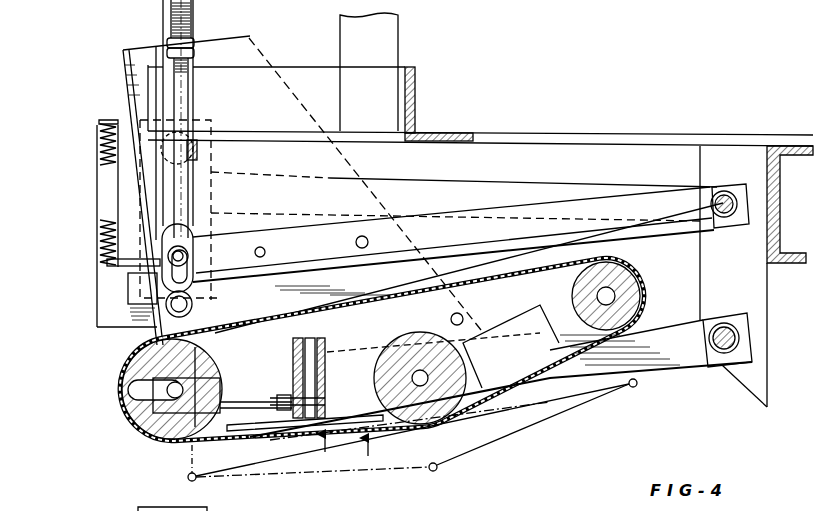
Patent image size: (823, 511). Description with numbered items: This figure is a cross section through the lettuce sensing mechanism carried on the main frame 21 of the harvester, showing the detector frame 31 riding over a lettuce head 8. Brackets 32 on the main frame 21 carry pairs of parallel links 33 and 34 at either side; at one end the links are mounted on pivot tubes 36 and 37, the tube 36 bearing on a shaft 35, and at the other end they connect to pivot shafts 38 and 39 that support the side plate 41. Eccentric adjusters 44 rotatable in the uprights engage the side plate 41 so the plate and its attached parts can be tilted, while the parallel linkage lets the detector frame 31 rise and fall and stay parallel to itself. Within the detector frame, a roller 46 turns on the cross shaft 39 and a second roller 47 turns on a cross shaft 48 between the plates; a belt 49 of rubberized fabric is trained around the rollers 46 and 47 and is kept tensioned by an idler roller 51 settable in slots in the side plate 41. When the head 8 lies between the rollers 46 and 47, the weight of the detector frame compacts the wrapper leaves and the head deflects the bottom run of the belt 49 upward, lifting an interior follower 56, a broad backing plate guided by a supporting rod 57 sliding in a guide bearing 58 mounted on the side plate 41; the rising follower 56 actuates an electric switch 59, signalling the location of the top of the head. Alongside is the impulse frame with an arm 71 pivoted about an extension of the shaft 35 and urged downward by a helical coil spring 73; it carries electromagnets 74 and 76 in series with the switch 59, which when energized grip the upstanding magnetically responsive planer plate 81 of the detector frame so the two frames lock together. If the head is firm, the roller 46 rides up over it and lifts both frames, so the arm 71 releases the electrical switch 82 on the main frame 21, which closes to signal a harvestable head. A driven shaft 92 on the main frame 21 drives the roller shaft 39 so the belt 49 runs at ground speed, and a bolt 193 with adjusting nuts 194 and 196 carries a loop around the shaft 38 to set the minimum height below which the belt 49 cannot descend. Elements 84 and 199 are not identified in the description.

The lettuce head 8 is at (410, 458).
The main frame 21 is at (414, 103).
The detector frame 31 is at (410, 207).
The brackets 32 is at (702, 295).
The parallel links 33 is at (517, 207).
The parallel links 34 is at (673, 363).
The shaft 35 is at (725, 222).
The pivot tube 36 is at (732, 190).
The pivot tube 37 is at (723, 364).
The pivot shaft 38 is at (188, 262).
The pivot shaft 39 is at (133, 380).
The side plate 41 is at (316, 306).
The eccentric adjusters 44 is at (192, 313).
The roller 46 is at (133, 415).
The roller 47 is at (437, 316).
The cross shaft 48 is at (428, 385).
The belt 49 is at (127, 393).
The idler roller 51 is at (612, 270).
The interior follower 56 is at (248, 412).
The supporting rod 57 is at (320, 347).
The guide bearing 58 is at (295, 352).
The electric switch 59 is at (290, 387).
The arm 71 is at (597, 163).
The helical coil spring 73 is at (100, 260).
The electromagnet 74 is at (135, 178).
The electromagnet 76 is at (134, 227).
The planer plate 81 is at (276, 58).
The electrical switch 82 is at (133, 300).
The base member 84 is at (191, 507).
The driven shaft 92 is at (724, 321).
The bolt 193 is at (177, 90).
The adjusting nut 194 is at (167, 40).
The adjusting nut 196 is at (167, 50).
The threaded end of bolt 199 is at (195, 25).